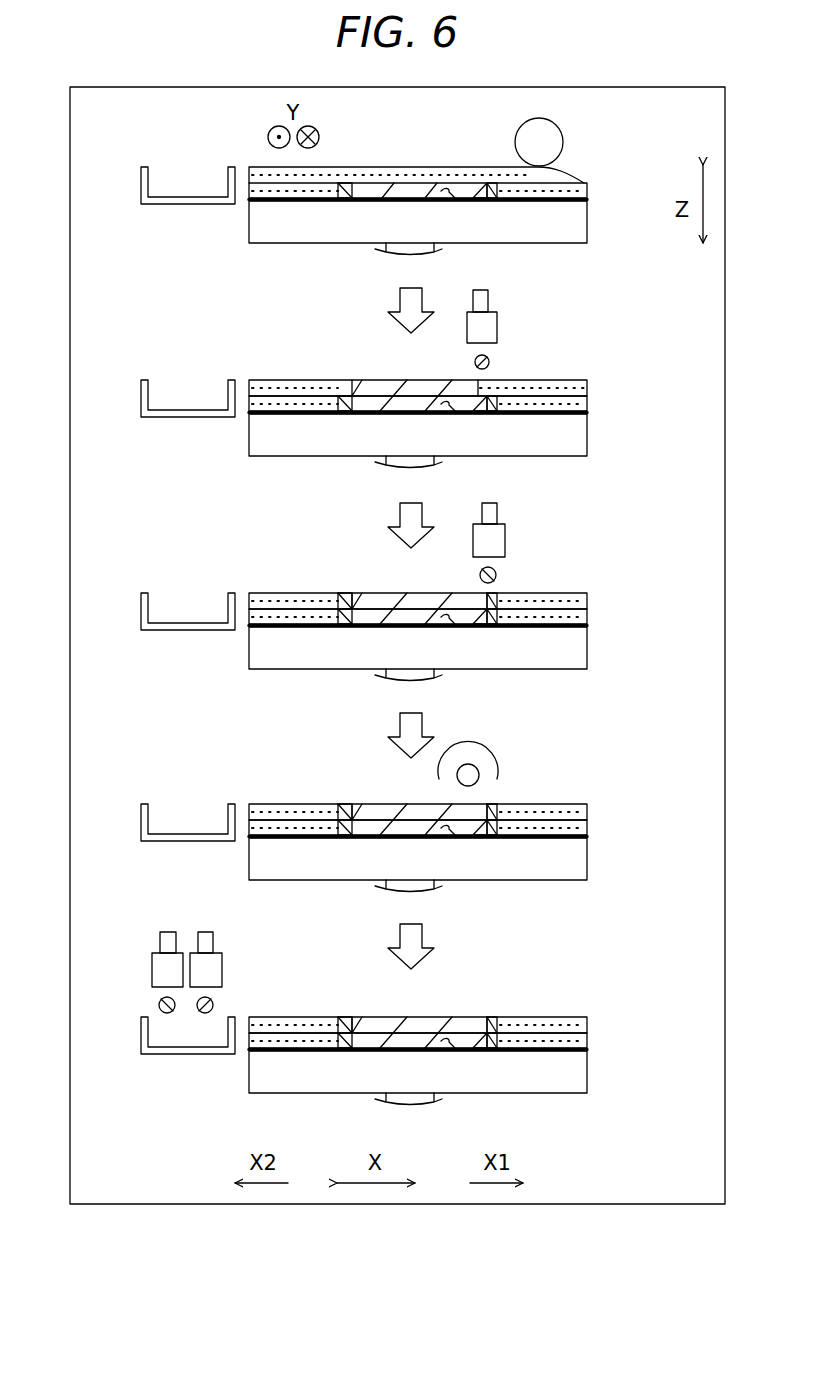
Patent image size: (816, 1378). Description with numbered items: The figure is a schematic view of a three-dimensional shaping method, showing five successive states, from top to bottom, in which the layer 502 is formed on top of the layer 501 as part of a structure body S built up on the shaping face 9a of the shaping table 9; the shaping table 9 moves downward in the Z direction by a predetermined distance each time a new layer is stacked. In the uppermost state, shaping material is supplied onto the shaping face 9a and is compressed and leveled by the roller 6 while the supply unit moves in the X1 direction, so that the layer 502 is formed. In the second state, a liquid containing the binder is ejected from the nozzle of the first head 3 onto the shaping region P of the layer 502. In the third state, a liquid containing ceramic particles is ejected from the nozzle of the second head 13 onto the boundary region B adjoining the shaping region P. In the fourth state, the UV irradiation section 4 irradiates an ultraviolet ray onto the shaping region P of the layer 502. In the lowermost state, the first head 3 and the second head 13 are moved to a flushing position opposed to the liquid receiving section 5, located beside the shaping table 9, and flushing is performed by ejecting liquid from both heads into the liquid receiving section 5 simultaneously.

The first head 3 is at (497, 325).
The UV irradiation section 4 is at (487, 752).
The liquid receiving section 5 is at (141, 193).
The roller 6 is at (517, 130).
The shaping table 9 is at (283, 229).
The shaping face 9a is at (249, 200).
The second head 13 is at (505, 537).
The layer 501 is at (588, 187).
The layer 502 is at (565, 171).
The boundary region B is at (343, 204).
The structure body S is at (455, 201).
The shaping region P is at (365, 376).